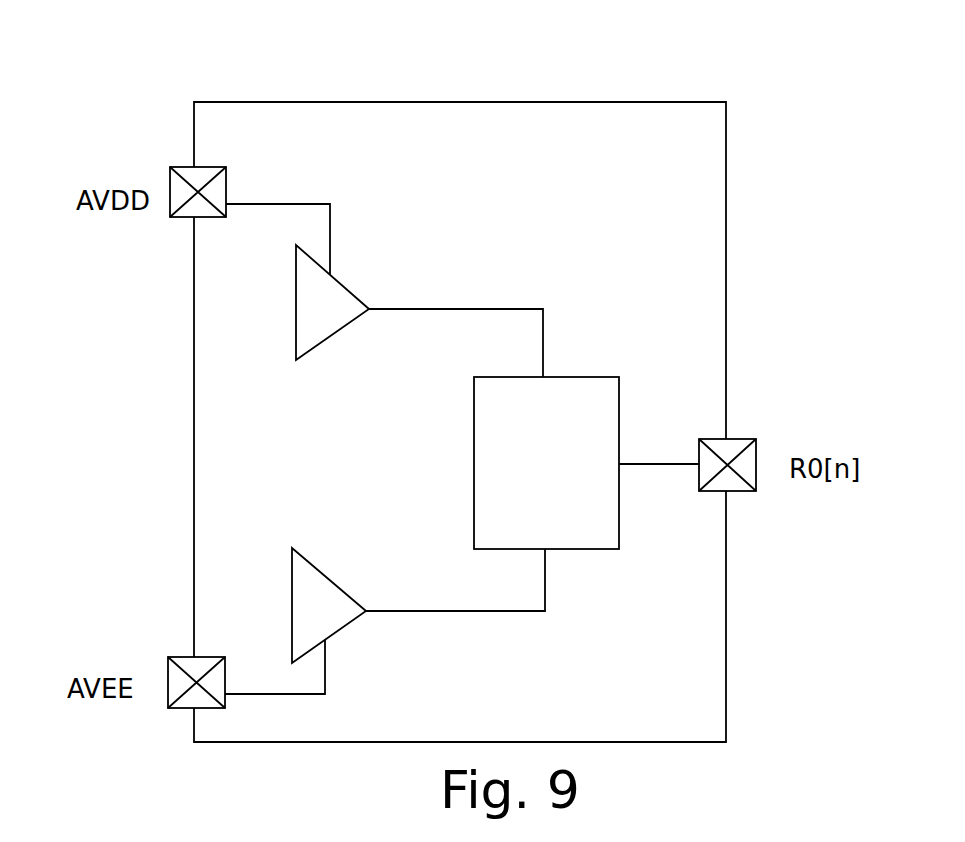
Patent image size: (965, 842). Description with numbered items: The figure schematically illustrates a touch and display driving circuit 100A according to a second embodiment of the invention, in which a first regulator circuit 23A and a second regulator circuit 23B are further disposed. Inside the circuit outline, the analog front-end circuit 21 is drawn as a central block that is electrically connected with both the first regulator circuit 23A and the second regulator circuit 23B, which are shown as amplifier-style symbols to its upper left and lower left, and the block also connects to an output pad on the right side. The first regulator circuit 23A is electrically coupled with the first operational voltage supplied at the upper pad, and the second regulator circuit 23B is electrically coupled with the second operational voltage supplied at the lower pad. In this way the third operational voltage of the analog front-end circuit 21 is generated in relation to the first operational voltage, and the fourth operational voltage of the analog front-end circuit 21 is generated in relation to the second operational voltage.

The touch and display driving circuit 100A is at (777, 130).
The analog front-end circuit 21 is at (570, 493).
The first regulator circuit 23A is at (308, 307).
The second regulator circuit 23B is at (316, 598).